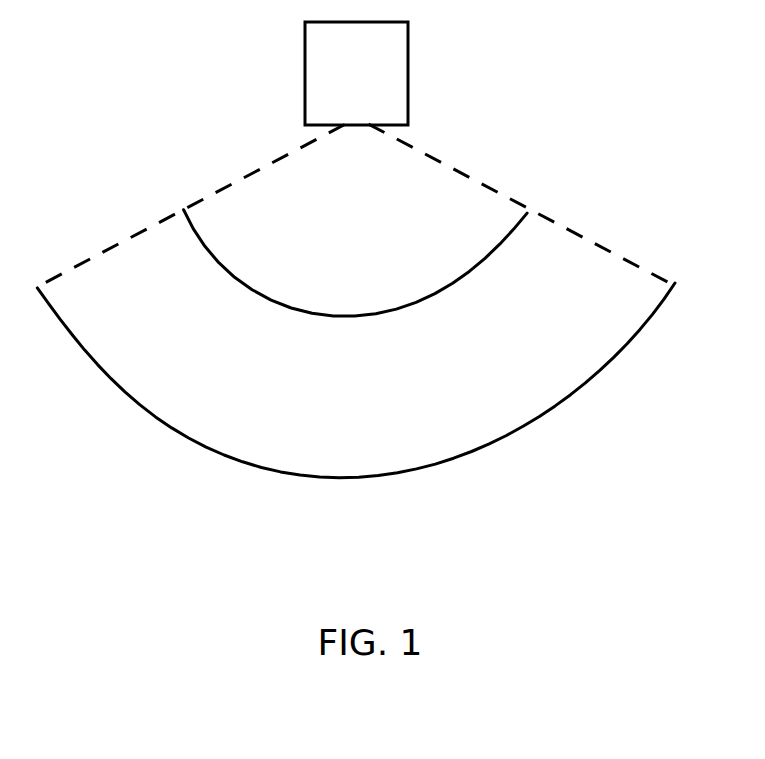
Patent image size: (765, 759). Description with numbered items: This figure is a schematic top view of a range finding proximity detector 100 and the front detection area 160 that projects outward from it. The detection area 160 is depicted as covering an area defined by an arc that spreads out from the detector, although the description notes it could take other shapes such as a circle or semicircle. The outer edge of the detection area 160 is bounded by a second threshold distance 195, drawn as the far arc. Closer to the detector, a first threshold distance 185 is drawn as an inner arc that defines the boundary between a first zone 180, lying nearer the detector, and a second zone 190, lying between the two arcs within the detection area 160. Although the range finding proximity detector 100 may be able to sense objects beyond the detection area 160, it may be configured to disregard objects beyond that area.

The range finding proximity detector 100 is at (335, 52).
The detection area 160 is at (124, 156).
The first zone 180 is at (379, 260).
The first threshold distance 185 is at (495, 247).
The second zone 190 is at (379, 412).
The second threshold distance 195 is at (618, 350).